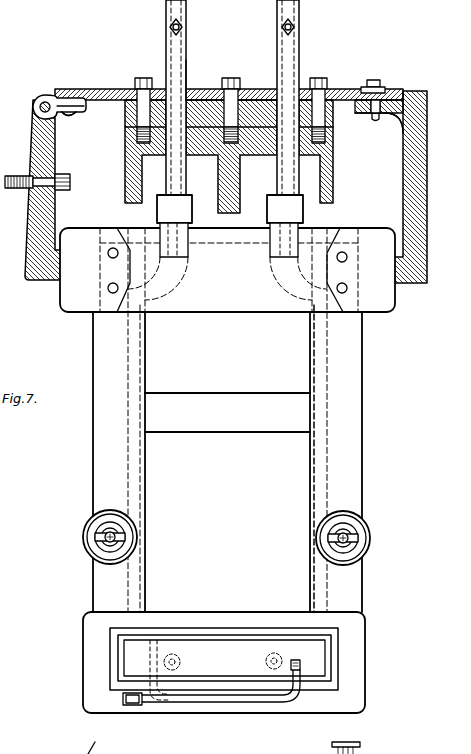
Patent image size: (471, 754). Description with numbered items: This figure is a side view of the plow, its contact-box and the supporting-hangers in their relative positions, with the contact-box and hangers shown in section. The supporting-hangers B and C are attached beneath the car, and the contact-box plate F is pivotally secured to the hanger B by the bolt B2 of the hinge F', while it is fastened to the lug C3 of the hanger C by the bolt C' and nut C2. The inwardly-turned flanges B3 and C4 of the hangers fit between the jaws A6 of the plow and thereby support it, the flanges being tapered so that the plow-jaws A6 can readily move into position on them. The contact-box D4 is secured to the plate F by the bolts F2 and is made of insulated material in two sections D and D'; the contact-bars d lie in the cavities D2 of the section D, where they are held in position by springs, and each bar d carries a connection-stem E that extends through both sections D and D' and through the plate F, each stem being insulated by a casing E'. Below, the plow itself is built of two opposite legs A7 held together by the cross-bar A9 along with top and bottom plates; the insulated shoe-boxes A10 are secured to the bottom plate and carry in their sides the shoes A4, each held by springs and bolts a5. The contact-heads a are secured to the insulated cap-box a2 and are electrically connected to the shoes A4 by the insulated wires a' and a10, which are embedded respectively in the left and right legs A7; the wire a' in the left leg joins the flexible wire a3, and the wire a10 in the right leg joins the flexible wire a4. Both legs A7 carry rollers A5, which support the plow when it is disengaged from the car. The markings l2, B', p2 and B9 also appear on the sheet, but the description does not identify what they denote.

The contact-box plate F is at (229, 83).
The bolts F2 is at (139, 79).
The hinge F' is at (82, 114).
The connection-stem E is at (243, 97).
The insulating casing E' is at (196, 76).
The tube fitting l2 is at (170, 27).
The contact-box section D is at (237, 156).
The contact-box section D' is at (239, 124).
The cavities D2 is at (231, 184).
The contact-box D4 is at (114, 151).
The supporting-hanger C is at (402, 187).
The bolt C' is at (383, 91).
The nut C2 is at (378, 91).
The lug C3 is at (387, 114).
The inwardly-turned flange C4 is at (401, 283).
The supporting-hanger B is at (58, 190).
The pillar bolt B' is at (48, 180).
The bolt B2 is at (41, 105).
The inwardly-turned flange B3 is at (68, 273).
The contact-bar d is at (230, 209).
The contact-head a is at (229, 245).
The insulated wire a' is at (227, 481).
The insulated cap-box a2 is at (229, 272).
The flexible wire a3 is at (230, 703).
The flexible wire a4 is at (154, 670).
The bolts a5 is at (172, 662).
The insulated wire a10 is at (318, 465).
The shoe A4 is at (224, 659).
The roller A5 is at (88, 540).
The plow-jaws A6 is at (227, 270).
The legs A7 is at (330, 373).
The cross-bar A9 is at (227, 412).
The insulated shoe-box A10 is at (207, 633).
The lower fitting p2 is at (100, 740).
The adjacent figure part B9 is at (357, 747).